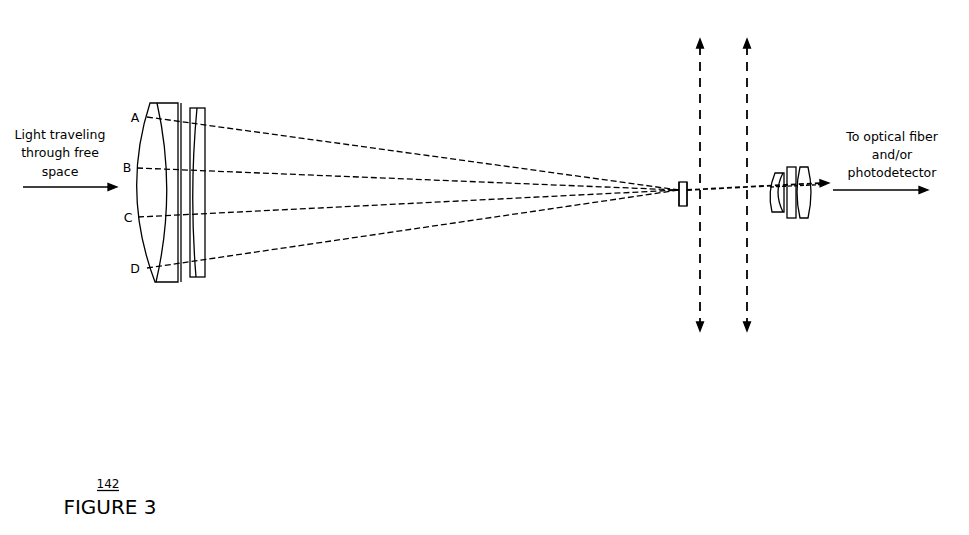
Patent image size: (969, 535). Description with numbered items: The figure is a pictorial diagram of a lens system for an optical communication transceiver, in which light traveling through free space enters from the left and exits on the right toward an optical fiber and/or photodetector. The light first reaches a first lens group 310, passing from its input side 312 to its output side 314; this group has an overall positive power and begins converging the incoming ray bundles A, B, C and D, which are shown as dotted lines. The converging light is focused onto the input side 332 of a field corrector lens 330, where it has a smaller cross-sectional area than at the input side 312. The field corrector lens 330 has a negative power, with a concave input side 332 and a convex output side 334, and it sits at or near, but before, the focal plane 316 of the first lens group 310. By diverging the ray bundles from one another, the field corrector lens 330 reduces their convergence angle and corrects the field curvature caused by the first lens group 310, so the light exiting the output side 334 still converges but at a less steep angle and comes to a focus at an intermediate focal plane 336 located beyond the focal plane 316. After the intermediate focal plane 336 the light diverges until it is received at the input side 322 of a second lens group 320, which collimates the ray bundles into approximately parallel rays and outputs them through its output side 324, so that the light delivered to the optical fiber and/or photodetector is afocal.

The first lens group 310 is at (205, 92).
The input side of the first lens group 312 is at (134, 240).
The output side of the first lens group 314 is at (214, 270).
The focal plane of the first lens group 316 is at (700, 175).
The second lens group 320 is at (818, 158).
The input side of the second lens group 322 is at (778, 225).
The output side of the second lens group 324 is at (819, 216).
The field corrector lens 330 is at (678, 181).
The input side of the field corrector lens 332 is at (670, 211).
The output side of the field corrector lens 334 is at (689, 213).
The intermediate focal plane 336 is at (760, 175).